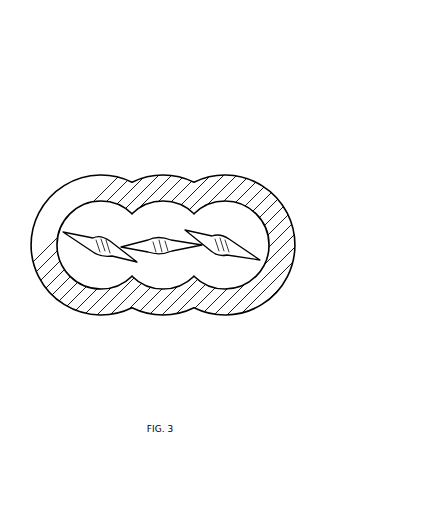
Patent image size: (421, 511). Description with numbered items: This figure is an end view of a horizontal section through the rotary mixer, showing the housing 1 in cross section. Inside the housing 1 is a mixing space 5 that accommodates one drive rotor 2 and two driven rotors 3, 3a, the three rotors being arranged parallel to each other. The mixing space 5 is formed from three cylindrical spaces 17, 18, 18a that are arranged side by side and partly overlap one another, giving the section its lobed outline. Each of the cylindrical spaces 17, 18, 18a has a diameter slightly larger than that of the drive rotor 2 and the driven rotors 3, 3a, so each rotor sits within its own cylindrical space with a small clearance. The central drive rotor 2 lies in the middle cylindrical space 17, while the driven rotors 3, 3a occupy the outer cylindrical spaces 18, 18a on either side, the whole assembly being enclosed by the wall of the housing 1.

The housing 1 is at (260, 185).
The drive rotor 2 is at (158, 236).
The driven rotor 3 is at (99, 236).
The driven rotor 3a is at (223, 226).
The mixing space 5 is at (163, 300).
The cylindrical space 17 is at (159, 273).
The cylindrical space 18 is at (100, 274).
The cylindrical space 18a is at (228, 282).